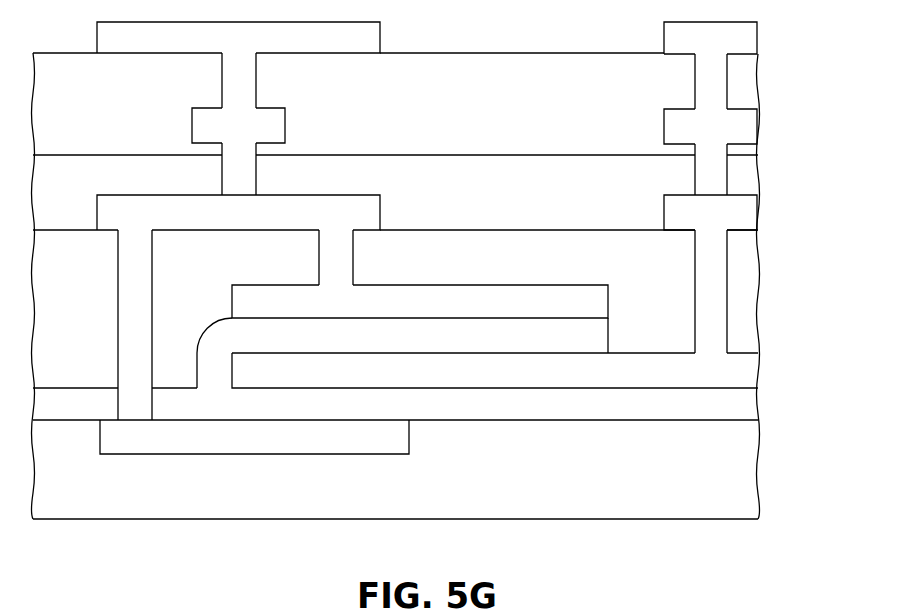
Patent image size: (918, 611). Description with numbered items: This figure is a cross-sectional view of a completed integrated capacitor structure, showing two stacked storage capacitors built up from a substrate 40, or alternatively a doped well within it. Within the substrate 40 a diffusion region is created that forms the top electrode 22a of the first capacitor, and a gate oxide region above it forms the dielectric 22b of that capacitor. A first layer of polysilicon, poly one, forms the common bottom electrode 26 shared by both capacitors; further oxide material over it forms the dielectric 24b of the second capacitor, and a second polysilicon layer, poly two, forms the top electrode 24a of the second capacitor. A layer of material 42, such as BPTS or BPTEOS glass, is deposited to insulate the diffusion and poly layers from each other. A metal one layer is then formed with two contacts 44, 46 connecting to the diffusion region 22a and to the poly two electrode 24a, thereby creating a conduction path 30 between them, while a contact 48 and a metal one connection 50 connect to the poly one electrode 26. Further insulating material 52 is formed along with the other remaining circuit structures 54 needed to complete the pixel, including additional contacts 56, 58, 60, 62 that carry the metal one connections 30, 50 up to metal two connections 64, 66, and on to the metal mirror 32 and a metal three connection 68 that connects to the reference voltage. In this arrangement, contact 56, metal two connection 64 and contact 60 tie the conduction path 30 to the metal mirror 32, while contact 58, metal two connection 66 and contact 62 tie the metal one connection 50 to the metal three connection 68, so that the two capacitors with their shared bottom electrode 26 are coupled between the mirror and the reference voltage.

The metal mirror 32 is at (107, 42).
The metal 3 connection 68 is at (745, 43).
The contact 60 is at (247, 86).
The contact 62 is at (710, 98).
The metal 2 connection 64 is at (273, 132).
The metal 2 connection 66 is at (745, 133).
The contact 56 is at (238, 185).
The contact 58 is at (710, 185).
The remaining circuit structures 54 is at (508, 115).
The further insulating material 52 is at (508, 208).
The conduction path 30 is at (112, 213).
The metal 1 connection 50 is at (744, 220).
The contact 44 is at (143, 262).
The contact 46 is at (339, 262).
The contact 48 is at (710, 280).
The layer of material 42 is at (67, 335).
The top electrode 24a is at (598, 307).
The dielectric 24b is at (598, 342).
The bottom electrode 26 is at (754, 378).
The dielectric 22b is at (754, 413).
The top electrode 22a is at (114, 445).
The substrate 40 is at (693, 485).